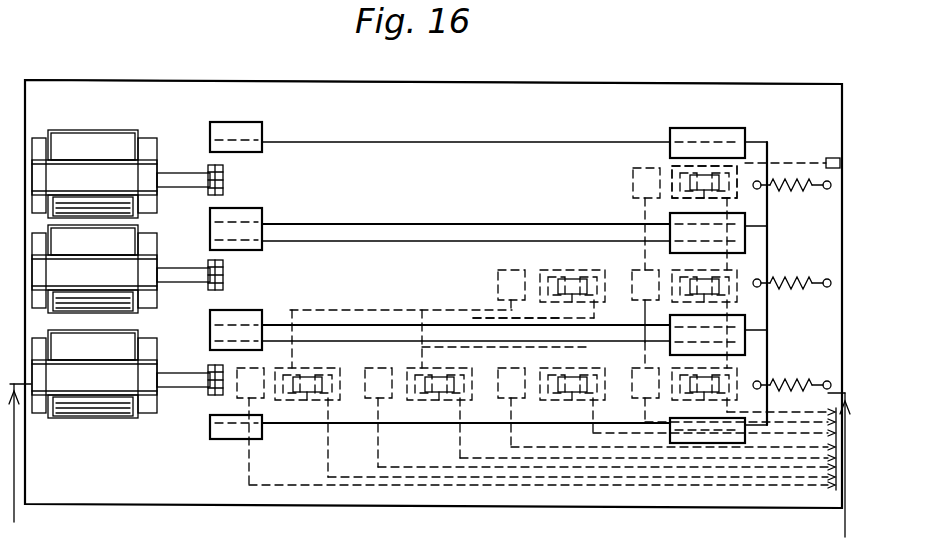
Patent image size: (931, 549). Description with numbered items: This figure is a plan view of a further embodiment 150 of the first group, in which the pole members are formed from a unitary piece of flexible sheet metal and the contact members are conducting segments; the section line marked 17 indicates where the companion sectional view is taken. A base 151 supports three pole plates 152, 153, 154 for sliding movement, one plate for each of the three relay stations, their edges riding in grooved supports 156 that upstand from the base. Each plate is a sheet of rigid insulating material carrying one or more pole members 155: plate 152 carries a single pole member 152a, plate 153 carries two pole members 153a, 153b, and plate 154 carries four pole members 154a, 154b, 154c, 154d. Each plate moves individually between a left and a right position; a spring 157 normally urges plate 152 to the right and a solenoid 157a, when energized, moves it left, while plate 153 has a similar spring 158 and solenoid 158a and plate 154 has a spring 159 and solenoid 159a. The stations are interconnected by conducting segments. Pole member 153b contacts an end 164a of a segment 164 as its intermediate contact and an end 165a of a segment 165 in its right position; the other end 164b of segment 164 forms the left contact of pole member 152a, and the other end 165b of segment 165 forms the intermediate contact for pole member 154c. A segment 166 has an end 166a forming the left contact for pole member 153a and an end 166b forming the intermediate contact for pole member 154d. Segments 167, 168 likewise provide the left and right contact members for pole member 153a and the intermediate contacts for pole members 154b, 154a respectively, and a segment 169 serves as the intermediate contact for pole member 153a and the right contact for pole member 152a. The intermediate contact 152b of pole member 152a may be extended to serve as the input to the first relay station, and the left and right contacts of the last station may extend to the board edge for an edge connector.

The further embodiment of the first group 150 is at (748, 52).
The base 151 is at (300, 80).
The pole plate 152 is at (364, 180).
The pole member 152a is at (690, 184).
The intermediate contact 152b is at (678, 130).
The pole plate 153 is at (351, 272).
The pole member 153a is at (695, 319).
The pole member 153b is at (558, 282).
The pole plate 154 is at (361, 364).
The pole member 154a is at (713, 386).
The pole member 154b is at (561, 400).
The pole member 154c is at (596, 417).
The pole member 154d is at (280, 398).
The pole member 155 is at (575, 270).
The grooved support 156 is at (226, 124).
The spring 157 is at (793, 194).
The solenoid 157a is at (100, 188).
The spring 158 is at (806, 278).
The solenoid 158a is at (100, 283).
The spring 159 is at (806, 381).
The solenoid 159a is at (100, 388).
The conducting segment 164 is at (644, 205).
The end of conducting segment 164a is at (522, 317).
The end of conducting segment 164b is at (633, 180).
The conducting segment 165 is at (629, 334).
The end of conducting segment 165a is at (608, 287).
The end of conducting segment 165b is at (412, 362).
The conducting segment 166 is at (404, 310).
The end of conducting segment 166a is at (498, 282).
The end of conducting segment 166b is at (295, 447).
The conducting segment 167 is at (608, 352).
The conducting segment 168 is at (742, 310).
The conducting segment 169 is at (780, 160).
The section line 17- 17 is at (429, 466).